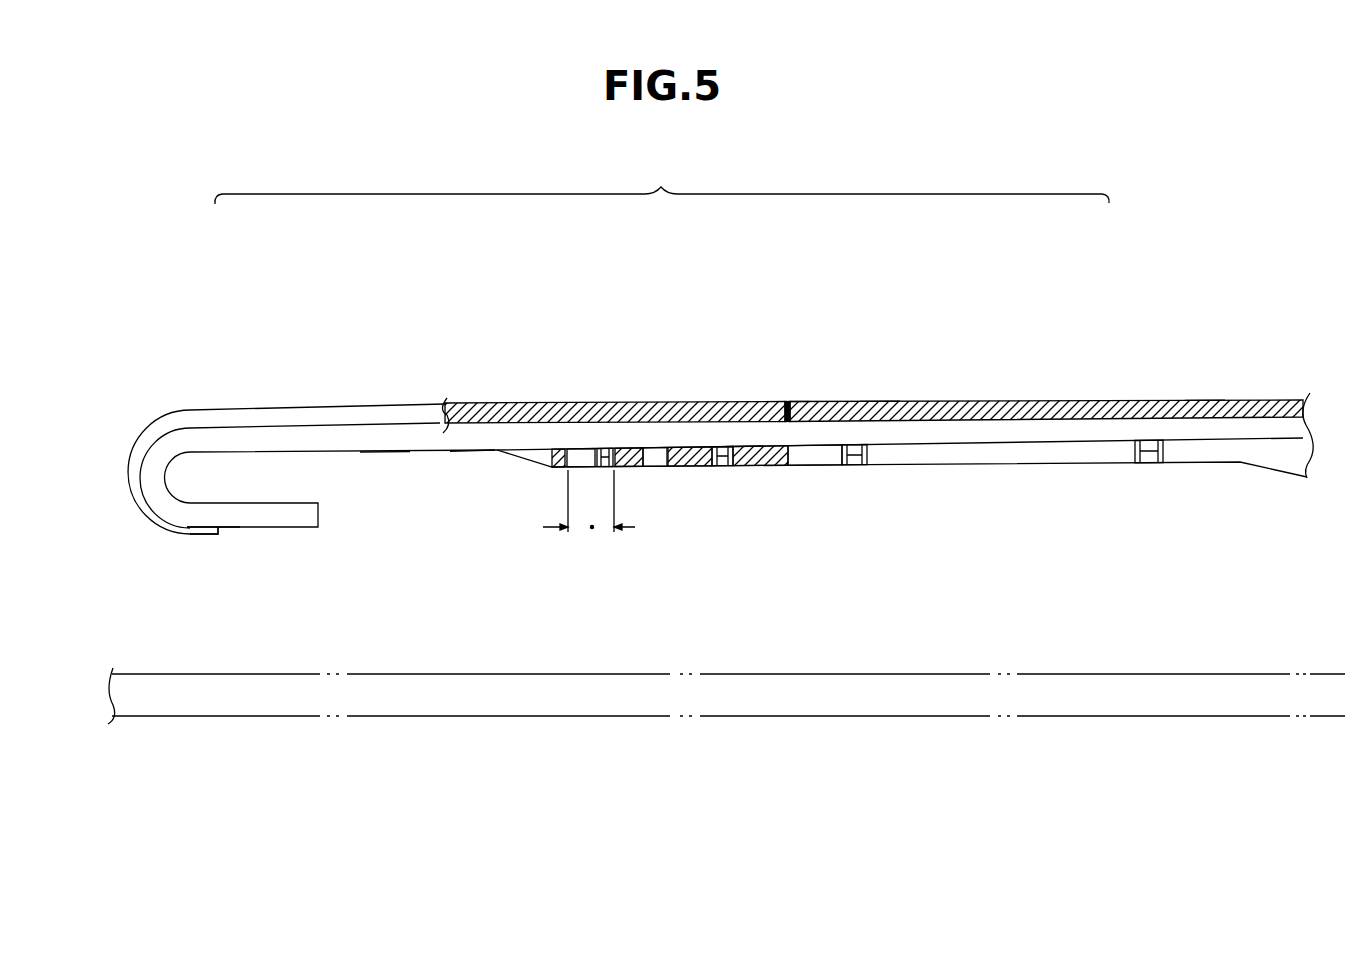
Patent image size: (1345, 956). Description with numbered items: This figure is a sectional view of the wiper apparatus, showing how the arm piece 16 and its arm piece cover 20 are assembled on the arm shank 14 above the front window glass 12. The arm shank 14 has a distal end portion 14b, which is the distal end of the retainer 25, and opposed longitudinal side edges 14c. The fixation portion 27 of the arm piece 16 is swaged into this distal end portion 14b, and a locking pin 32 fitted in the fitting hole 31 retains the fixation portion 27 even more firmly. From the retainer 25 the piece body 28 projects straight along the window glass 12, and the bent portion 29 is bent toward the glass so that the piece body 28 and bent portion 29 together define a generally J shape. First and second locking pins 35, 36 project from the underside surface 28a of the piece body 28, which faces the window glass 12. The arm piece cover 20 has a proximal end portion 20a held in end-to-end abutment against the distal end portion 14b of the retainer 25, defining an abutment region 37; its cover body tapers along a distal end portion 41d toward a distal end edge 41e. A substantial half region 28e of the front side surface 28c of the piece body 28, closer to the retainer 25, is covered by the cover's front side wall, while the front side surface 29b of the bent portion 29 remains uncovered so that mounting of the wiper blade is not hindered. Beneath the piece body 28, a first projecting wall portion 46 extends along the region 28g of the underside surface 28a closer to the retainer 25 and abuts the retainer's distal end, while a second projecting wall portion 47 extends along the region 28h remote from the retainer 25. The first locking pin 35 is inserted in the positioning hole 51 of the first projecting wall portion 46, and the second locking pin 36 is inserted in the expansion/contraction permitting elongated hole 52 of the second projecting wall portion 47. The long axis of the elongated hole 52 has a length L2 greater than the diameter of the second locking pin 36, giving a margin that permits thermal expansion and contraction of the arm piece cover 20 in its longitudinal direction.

The front window glass 12 is at (895, 672).
The arm shank 14 is at (1270, 402).
The distal end portion 14b is at (880, 401).
The longitudinal side edges 14c is at (991, 460).
The arm piece 16 is at (662, 180).
The arm piece cover 20 is at (388, 406).
The proximal end portion 20a is at (787, 401).
The retainer 25 is at (1205, 400).
The fixation portion 27 is at (1073, 400).
The piece body 28 is at (658, 432).
The underside surface 28a is at (470, 450).
The front side surface 28c is at (385, 452).
The substantial half region 28e is at (706, 468).
The region closer to the retainer 28g is at (765, 468).
The region remote from the retainer 28h is at (545, 465).
The bent portion 29 is at (152, 462).
The front side surface of the bent portion 29b is at (165, 508).
The fitting hole 31 is at (852, 468).
The locking pin 32 is at (870, 468).
The first locking pin 35 is at (723, 468).
The second locking pin 36 is at (605, 470).
The abutment region 37 is at (795, 401).
The distal end portion of the cover body 41d is at (188, 536).
The distal end edge 41e is at (218, 538).
The first projecting wall portion 46 is at (695, 468).
The second projecting wall portion 47 is at (557, 470).
The positioning hole 51 is at (722, 449).
The expansion/contraction permitting elongated hole 52 is at (585, 449).
The length of the long axis L2 is at (592, 530).